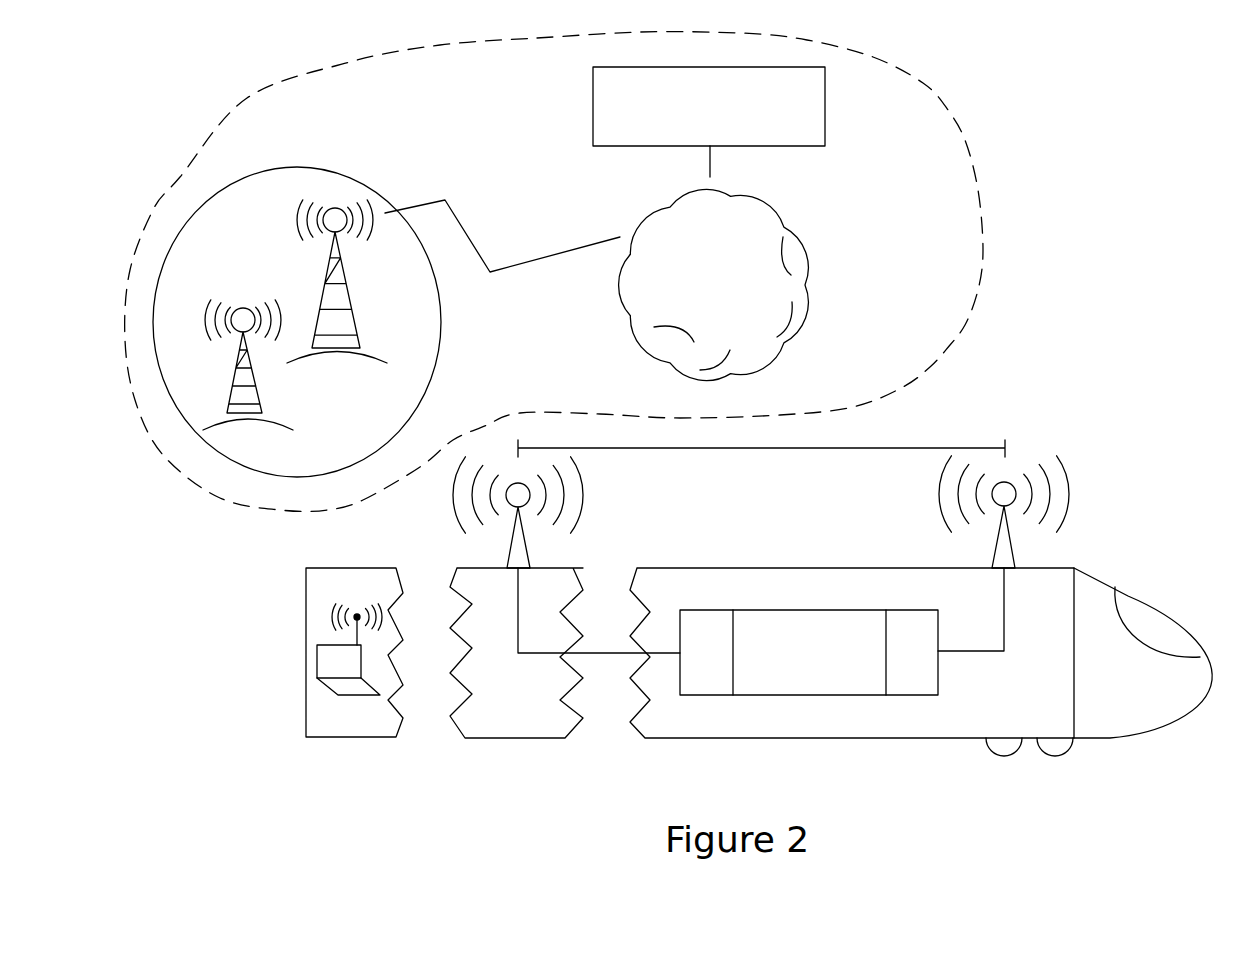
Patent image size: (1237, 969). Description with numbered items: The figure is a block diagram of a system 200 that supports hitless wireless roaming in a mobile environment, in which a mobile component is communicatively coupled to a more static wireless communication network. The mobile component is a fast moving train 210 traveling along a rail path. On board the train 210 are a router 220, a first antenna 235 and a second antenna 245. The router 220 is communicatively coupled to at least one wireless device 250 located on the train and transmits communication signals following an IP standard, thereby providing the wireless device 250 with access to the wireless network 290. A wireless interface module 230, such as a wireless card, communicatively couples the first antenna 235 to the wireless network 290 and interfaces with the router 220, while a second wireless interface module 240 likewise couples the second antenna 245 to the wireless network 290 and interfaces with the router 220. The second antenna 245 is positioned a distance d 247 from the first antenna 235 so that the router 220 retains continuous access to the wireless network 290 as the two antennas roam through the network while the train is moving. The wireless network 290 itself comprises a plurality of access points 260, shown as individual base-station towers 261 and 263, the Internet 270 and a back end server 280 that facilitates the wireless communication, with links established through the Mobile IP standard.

The system 200 is at (1184, 77).
The fast moving train 210 is at (1115, 583).
The router 220 is at (837, 678).
The wireless interface module 230 is at (938, 677).
The first antenna 235 is at (995, 552).
The wireless interface module 240 is at (708, 612).
The second antenna 245 is at (528, 553).
The distance d 247 is at (773, 443).
The wireless device 250 is at (355, 689).
The access points 260 is at (277, 167).
The base station 261 is at (350, 283).
The base station 263 is at (253, 383).
The Internet 270 is at (826, 273).
The back end server 280 is at (825, 107).
The wireless network 290 is at (962, 134).